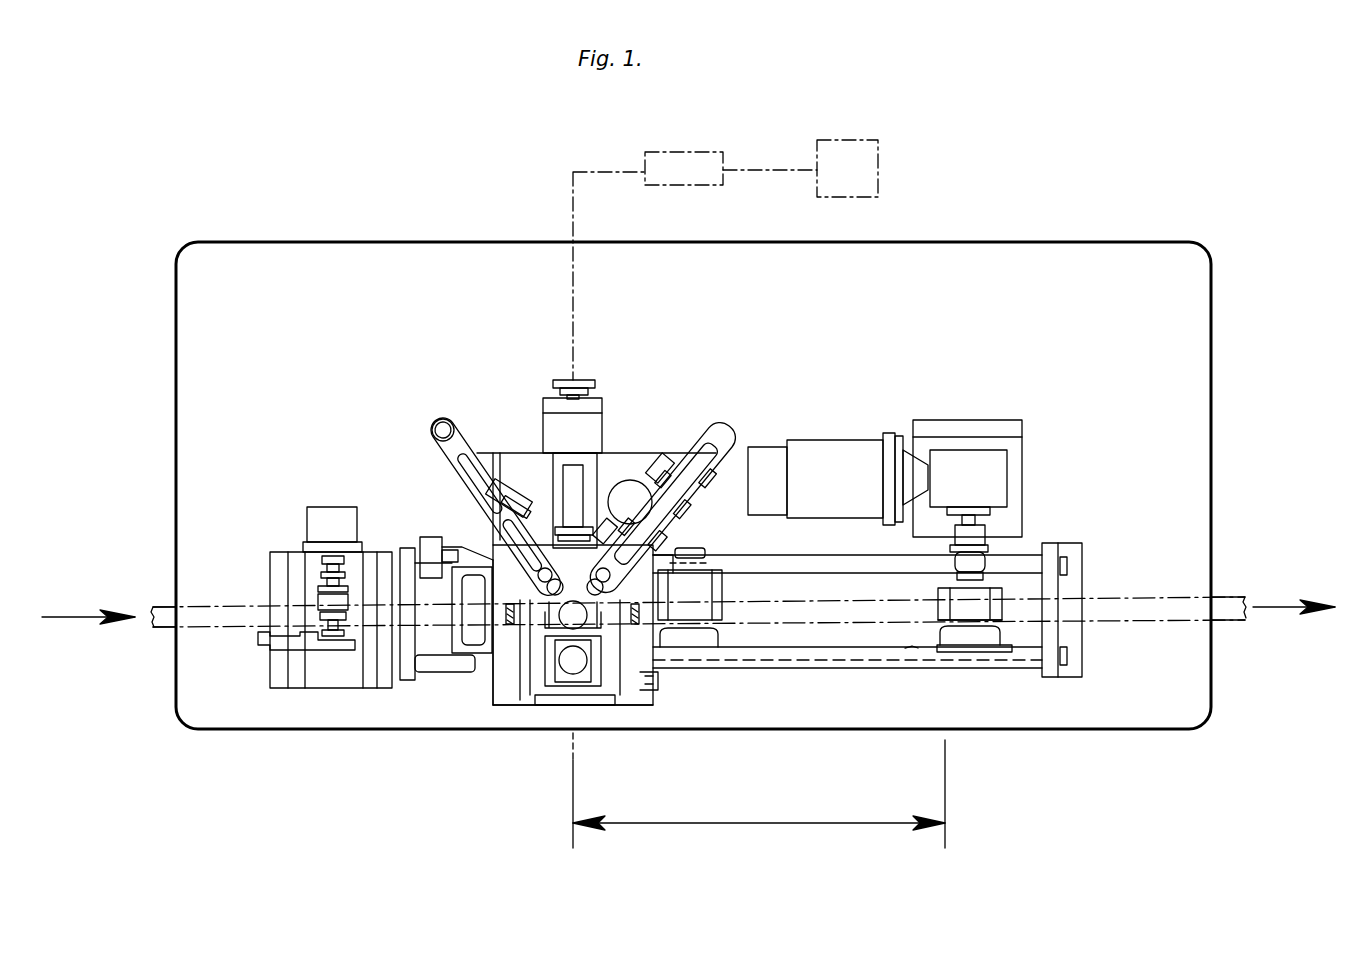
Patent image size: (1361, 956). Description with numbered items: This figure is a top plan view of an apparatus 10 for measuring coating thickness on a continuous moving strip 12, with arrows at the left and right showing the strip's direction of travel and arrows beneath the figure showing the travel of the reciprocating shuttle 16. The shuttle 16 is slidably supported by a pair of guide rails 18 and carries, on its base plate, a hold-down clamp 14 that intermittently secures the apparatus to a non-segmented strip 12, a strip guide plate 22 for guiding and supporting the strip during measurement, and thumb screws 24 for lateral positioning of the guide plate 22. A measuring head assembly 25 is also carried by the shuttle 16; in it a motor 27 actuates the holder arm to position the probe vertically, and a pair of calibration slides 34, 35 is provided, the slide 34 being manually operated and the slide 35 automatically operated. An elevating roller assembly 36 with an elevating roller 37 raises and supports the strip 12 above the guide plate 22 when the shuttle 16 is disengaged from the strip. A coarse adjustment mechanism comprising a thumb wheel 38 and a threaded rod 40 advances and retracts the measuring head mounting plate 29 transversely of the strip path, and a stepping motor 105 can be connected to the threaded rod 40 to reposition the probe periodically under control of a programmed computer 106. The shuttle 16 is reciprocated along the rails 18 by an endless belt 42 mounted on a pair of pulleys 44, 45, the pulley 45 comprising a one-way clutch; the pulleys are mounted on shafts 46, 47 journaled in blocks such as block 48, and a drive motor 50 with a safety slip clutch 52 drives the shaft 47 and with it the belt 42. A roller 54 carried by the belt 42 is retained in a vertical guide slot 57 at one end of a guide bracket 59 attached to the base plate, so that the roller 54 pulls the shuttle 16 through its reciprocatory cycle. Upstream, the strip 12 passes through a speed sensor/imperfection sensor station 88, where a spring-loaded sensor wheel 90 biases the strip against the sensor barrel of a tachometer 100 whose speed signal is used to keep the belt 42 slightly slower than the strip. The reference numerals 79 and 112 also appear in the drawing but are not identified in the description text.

The apparatus 10 is at (657, 362).
The continuous moving strip 12 is at (155, 605).
The hold-down clamp 14 is at (513, 708).
The reciprocating shuttle 16 is at (520, 704).
The guide rails 18 is at (1034, 544).
The strip guide plate 22 is at (540, 700).
The thumb screws 24 is at (506, 660).
The measuring head assembly 25 is at (545, 496).
The motor 27 is at (578, 462).
The measuring head mounting plate 29 is at (492, 458).
The calibration slide 34 is at (436, 437).
The calibration slide 35 is at (712, 428).
The elevating roller assembly 36 is at (426, 538).
The elevating roller 37 is at (480, 640).
The thumb wheel 38 is at (564, 378).
The threaded rod 40 is at (602, 406).
The endless belt 42 is at (834, 638).
The pulley 44 is at (758, 638).
The pulley 45 is at (910, 638).
The shaft 46 is at (694, 580).
The shaft 47 is at (936, 610).
The block 48 is at (720, 586).
The drive motor 50 is at (840, 440).
The safety slip clutch 52 is at (912, 530).
The roller 54 is at (658, 688).
The vertical guide slot 57 is at (654, 704).
The guide bracket 59 is at (562, 720).
The carriage base 79 is at (936, 616).
The speed sensor/imperfection sensor station 88 is at (290, 494).
The sensor wheel 90 is at (314, 613).
The tachometer 100 is at (338, 506).
The stepping motor 105 is at (692, 151).
The computer 106 is at (856, 140).
The pivot pin 112 is at (446, 420).